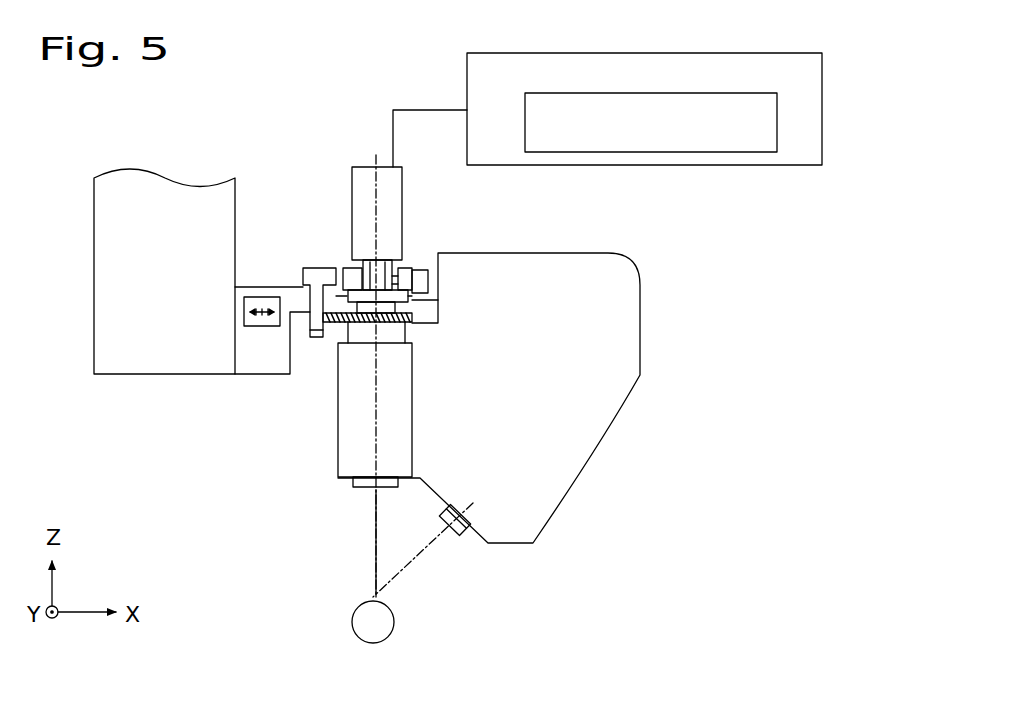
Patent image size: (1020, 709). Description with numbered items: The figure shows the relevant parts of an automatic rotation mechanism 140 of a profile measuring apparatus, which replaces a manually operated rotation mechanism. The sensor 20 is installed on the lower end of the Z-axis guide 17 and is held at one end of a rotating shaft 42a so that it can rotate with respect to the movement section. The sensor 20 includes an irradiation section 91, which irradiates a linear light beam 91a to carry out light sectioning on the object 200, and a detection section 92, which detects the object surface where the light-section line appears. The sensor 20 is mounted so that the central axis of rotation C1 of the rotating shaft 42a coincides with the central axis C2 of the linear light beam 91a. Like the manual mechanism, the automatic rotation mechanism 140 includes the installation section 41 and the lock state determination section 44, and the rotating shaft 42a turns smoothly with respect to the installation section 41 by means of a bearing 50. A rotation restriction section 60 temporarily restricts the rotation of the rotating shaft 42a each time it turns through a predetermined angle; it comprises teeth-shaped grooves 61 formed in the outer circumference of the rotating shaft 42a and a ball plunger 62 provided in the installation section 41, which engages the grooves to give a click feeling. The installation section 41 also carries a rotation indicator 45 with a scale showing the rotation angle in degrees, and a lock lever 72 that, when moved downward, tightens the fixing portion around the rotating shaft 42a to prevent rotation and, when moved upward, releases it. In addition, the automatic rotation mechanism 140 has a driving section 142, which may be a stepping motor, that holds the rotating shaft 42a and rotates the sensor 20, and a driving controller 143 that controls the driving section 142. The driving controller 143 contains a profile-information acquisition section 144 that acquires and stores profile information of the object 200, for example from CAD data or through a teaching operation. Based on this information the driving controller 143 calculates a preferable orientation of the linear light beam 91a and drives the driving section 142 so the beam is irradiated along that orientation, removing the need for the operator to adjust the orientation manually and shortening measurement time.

The Z-axis guide 17 is at (167, 206).
The installation section 41 is at (252, 352).
The rotation indicator 45 is at (253, 302).
The lock lever 72 is at (321, 262).
The driving section 142 is at (363, 183).
The lock state determination section 44 is at (414, 263).
The automatic rotation mechanism 140 is at (432, 249).
The rotating shaft 42a is at (422, 276).
The bearing 50 is at (410, 302).
The sensor 20 is at (622, 310).
The driving controller 143 is at (822, 82).
The profile-information acquisition section 144 is at (777, 133).
The teeth-shaped grooves 61 is at (367, 338).
The ball plunger 62 is at (317, 338).
The rotation restriction section 60 is at (335, 432).
The irradiation section 91 is at (363, 486).
The linear light beam 91a is at (372, 546).
The detection section 92 is at (470, 536).
The object 200 is at (394, 620).
The central axis of rotation C1 is at (380, 378).
The central axis of the linear light beam C2 is at (423, 550).